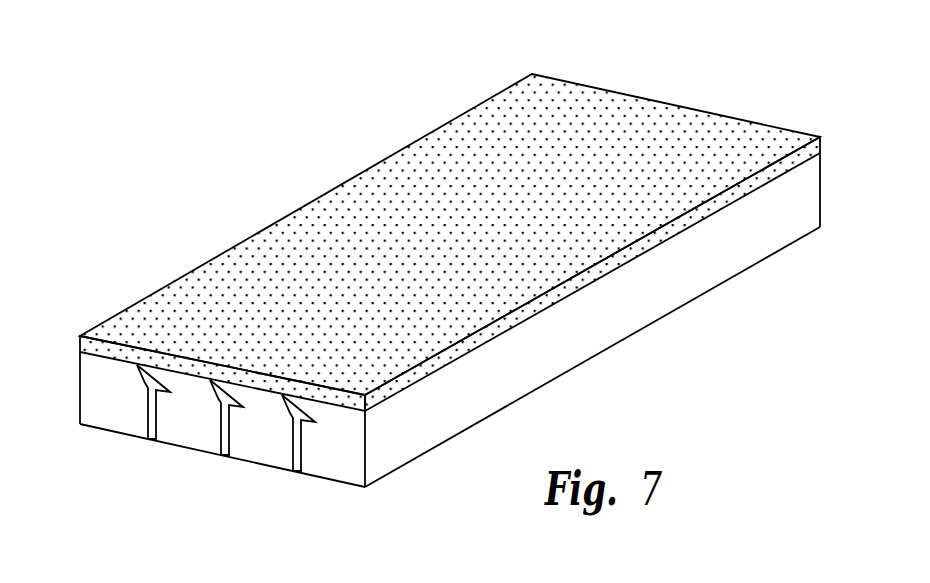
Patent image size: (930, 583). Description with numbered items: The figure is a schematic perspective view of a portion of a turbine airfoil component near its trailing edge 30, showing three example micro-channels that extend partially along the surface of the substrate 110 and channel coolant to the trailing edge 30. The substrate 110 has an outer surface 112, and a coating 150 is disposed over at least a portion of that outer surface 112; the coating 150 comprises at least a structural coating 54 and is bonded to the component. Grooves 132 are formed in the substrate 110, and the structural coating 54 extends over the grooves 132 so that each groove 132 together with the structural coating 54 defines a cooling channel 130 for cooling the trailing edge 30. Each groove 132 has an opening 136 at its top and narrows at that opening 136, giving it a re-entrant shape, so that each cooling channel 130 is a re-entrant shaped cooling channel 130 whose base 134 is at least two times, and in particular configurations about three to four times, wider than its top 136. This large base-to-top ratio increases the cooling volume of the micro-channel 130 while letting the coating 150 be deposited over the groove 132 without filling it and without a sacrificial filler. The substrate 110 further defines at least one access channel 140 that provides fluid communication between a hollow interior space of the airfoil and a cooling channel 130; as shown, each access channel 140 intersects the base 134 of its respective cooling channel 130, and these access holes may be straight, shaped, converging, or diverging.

The trailing edge 30 is at (430, 267).
The structural coating 54 is at (628, 107).
The substrate 110 is at (461, 332).
The outer surface 112 is at (375, 406).
The cooling channel 130 is at (194, 449).
The groove 132 is at (194, 449).
The base 134 is at (314, 428).
The opening 136 is at (134, 371).
The access channel 140 is at (298, 461).
The coating 150 is at (450, 213).